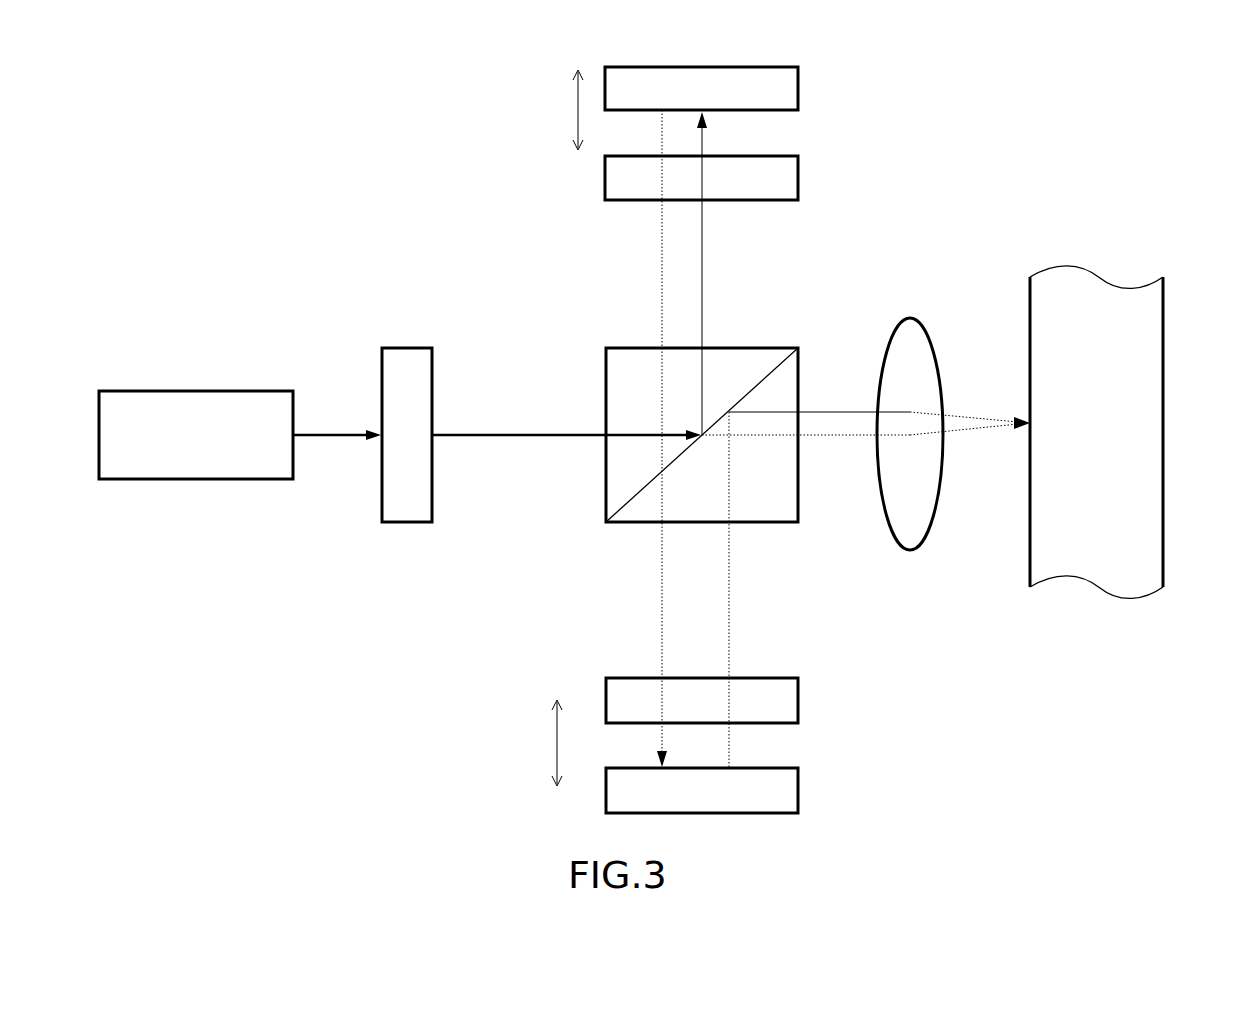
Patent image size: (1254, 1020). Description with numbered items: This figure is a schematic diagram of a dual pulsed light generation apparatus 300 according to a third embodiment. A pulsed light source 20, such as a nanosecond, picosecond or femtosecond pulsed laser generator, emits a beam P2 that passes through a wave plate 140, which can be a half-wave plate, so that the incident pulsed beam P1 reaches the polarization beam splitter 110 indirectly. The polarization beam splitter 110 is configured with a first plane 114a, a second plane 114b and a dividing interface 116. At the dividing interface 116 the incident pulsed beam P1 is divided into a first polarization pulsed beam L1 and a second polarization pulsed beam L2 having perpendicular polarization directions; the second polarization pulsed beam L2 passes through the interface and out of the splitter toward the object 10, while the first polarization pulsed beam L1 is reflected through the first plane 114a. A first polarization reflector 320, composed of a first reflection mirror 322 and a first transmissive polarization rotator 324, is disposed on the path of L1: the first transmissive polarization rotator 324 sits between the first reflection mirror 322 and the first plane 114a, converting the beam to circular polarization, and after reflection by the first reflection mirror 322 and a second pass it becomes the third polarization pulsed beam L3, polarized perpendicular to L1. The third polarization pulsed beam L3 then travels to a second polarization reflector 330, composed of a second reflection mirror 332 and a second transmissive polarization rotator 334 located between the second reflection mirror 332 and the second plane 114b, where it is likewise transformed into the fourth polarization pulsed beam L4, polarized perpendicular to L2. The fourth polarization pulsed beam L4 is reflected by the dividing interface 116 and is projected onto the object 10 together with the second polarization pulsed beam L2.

The dual pulsed light generation apparatus 300 is at (1046, 144).
The pulsed light source 20 is at (202, 447).
The light beam from light source P2 is at (326, 440).
The wave plate 140 is at (403, 360).
The incident pulsed beam P1 is at (491, 440).
The polarization beam splitter 110 is at (692, 391).
The first plane 114a is at (609, 339).
The second plane 114b is at (632, 525).
The dividing interface 116 is at (776, 350).
The first polarization pulsed beam L1 is at (705, 236).
The second polarization pulsed beam L2 is at (832, 440).
The third polarization pulsed beam L3 is at (660, 240).
The fourth polarization pulsed beam L4 is at (860, 410).
The object 10 is at (1145, 363).
The first polarization reflector 320 is at (761, 133).
The first reflection mirror 322 is at (797, 88).
The first transmissive polarization rotator 324 is at (797, 174).
The second polarization reflector 330 is at (750, 745).
The second transmissive polarization rotator 334 is at (797, 703).
The second reflection mirror 332 is at (797, 788).